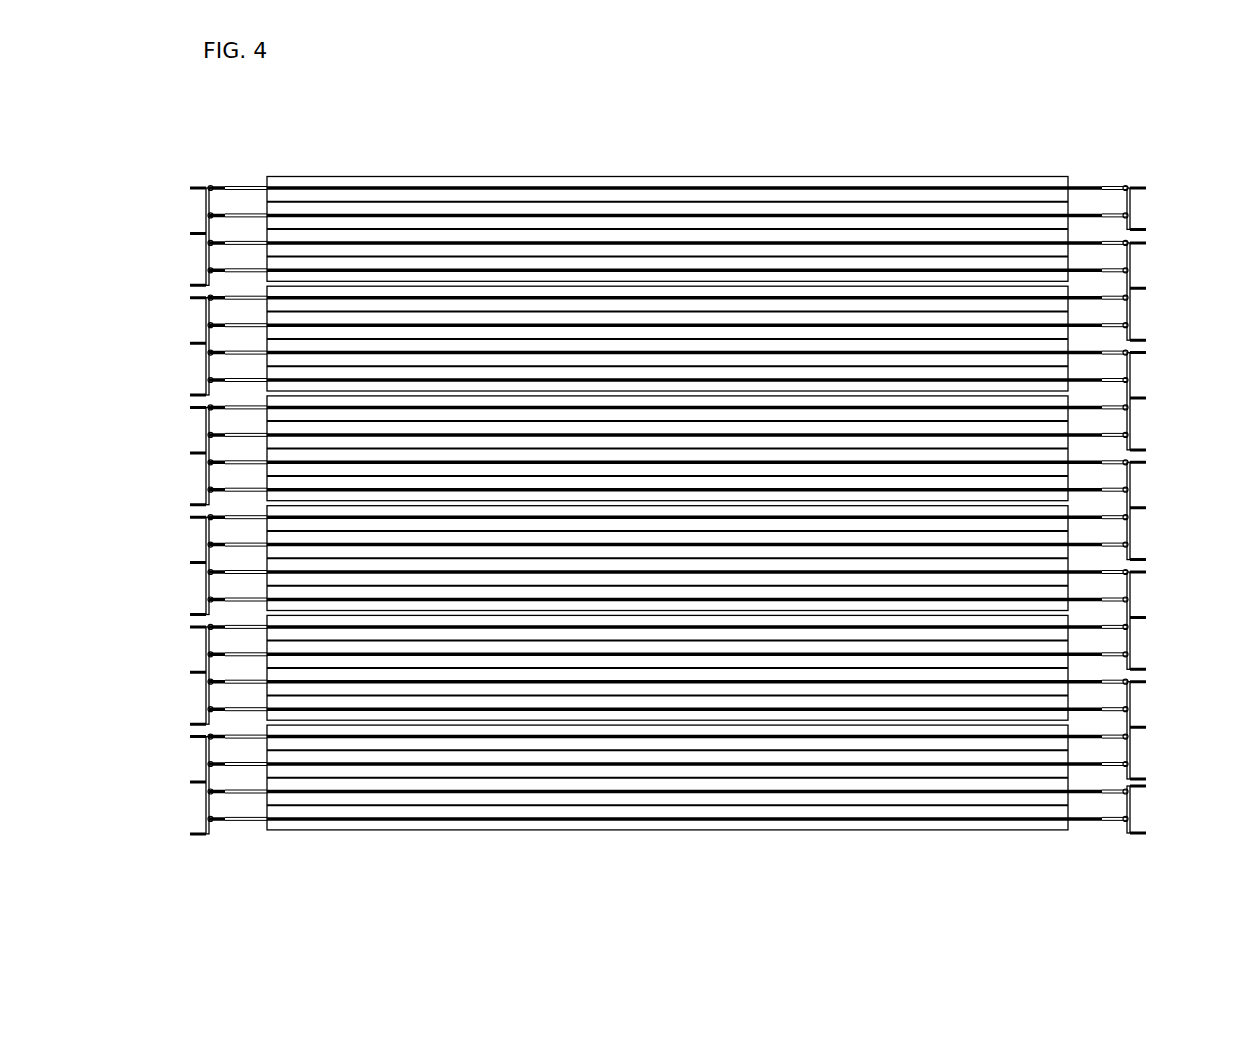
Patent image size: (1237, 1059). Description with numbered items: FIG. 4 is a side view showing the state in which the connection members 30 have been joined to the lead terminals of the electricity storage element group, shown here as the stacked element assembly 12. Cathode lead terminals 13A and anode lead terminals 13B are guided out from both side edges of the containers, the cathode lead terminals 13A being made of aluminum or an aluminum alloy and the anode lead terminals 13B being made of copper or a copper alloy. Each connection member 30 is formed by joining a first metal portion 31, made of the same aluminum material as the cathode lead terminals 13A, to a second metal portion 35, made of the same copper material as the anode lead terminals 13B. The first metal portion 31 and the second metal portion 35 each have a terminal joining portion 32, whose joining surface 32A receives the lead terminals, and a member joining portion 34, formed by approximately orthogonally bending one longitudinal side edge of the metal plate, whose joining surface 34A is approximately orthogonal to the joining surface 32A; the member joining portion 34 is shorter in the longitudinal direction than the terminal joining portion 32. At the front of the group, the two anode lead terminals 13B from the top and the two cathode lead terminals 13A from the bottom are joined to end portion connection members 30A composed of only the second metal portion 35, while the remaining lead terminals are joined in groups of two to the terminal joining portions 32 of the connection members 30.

The battery module (cell stack) 12 is at (821, 177).
The cathode lead terminal 13A is at (211, 212).
The anode lead terminal 13B is at (208, 269).
The connection member 30 is at (196, 187).
The end portion connection member 30A is at (1141, 187).
The first metal portion 31 is at (207, 210).
The terminal joining portion 32 is at (1142, 242).
The joining surface of the terminal joining portion 32A is at (213, 318).
The member joining portion 34 is at (197, 345).
The joining surface of the member joining portion 34A is at (200, 234).
The second metal portion 35 is at (207, 279).